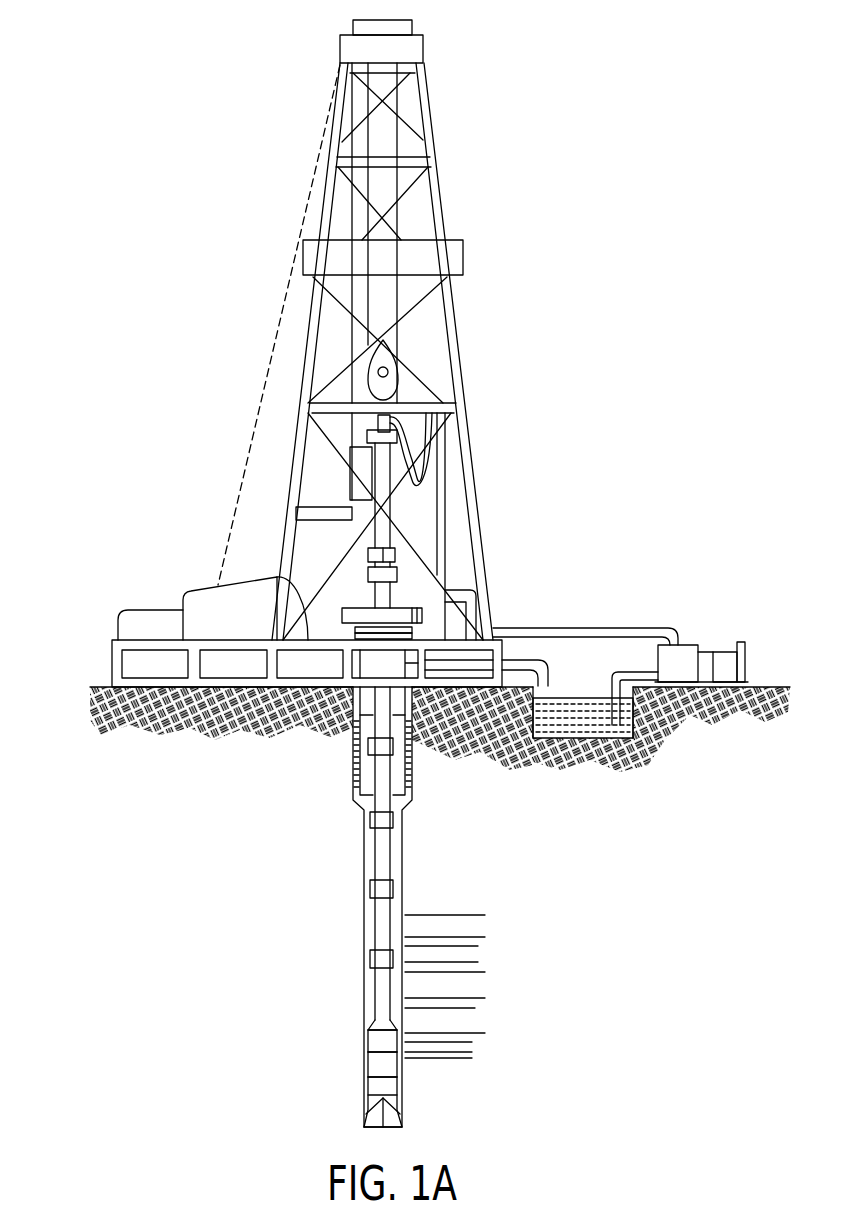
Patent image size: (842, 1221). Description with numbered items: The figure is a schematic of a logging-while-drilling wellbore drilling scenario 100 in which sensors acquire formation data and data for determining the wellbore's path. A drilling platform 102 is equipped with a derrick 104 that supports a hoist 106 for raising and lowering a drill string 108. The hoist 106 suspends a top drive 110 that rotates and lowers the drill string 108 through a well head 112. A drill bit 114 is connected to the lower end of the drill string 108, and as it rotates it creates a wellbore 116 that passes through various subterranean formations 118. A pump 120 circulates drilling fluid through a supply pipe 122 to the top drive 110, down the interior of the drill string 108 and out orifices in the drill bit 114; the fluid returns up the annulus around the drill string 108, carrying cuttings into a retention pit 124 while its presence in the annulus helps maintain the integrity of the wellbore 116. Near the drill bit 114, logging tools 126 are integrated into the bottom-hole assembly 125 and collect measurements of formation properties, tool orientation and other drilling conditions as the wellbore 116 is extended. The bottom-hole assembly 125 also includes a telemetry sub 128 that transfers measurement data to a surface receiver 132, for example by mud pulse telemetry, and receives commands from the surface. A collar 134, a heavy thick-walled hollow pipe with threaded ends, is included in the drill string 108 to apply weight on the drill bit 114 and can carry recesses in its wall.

The wellbore drilling scenario 100 is at (266, 74).
The drilling platform 102 is at (112, 665).
The derrick 104 is at (442, 195).
The hoist 106 is at (412, 377).
The drill string 108 is at (392, 857).
The top drive 110 is at (388, 453).
The well head 112 is at (402, 608).
The drill bit 114 is at (400, 1115).
The wellbore 116 is at (402, 875).
The subterranean formations 118 is at (490, 908).
The pump 120 is at (683, 652).
The supply pipe 122 is at (578, 628).
The retention pit 124 is at (572, 740).
The bottom-hole assembly 125 is at (295, 1018).
The logging tools 126 is at (375, 1068).
The telemetry sub 128 is at (375, 1042).
The surface receiver 132 is at (397, 555).
The collar 134 is at (380, 1075).